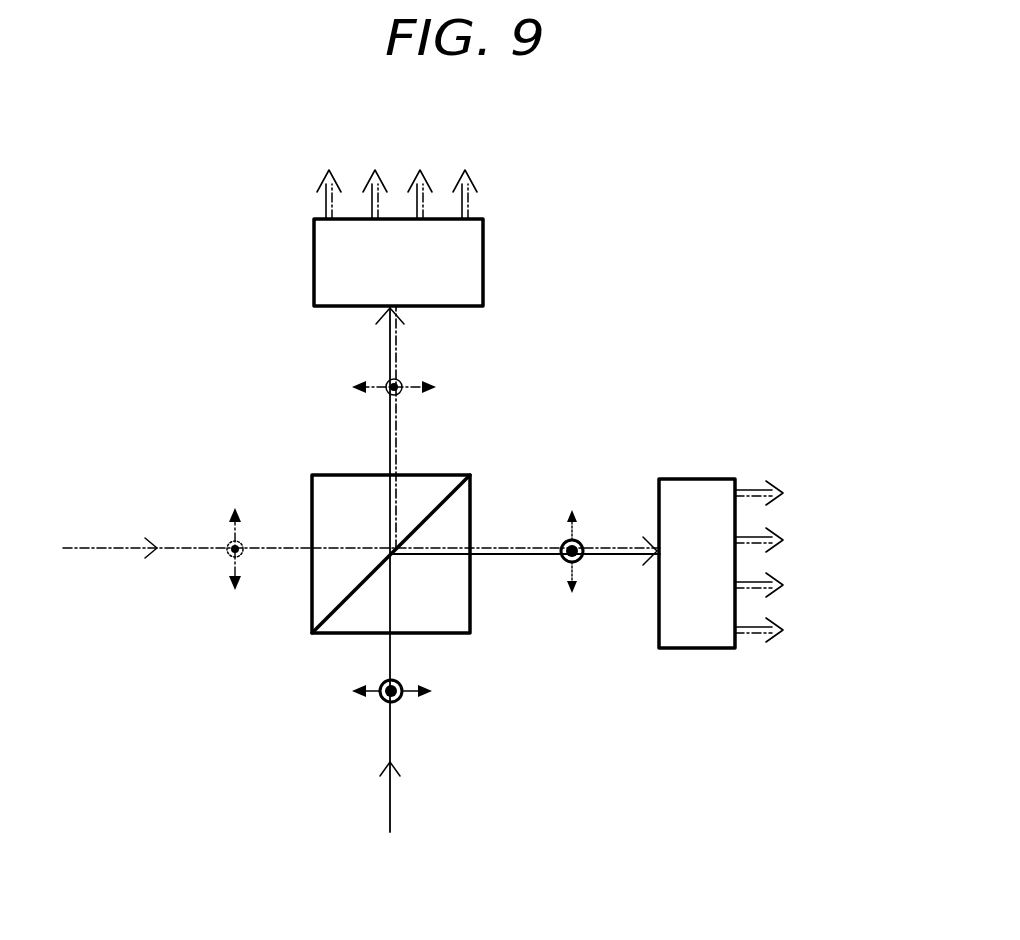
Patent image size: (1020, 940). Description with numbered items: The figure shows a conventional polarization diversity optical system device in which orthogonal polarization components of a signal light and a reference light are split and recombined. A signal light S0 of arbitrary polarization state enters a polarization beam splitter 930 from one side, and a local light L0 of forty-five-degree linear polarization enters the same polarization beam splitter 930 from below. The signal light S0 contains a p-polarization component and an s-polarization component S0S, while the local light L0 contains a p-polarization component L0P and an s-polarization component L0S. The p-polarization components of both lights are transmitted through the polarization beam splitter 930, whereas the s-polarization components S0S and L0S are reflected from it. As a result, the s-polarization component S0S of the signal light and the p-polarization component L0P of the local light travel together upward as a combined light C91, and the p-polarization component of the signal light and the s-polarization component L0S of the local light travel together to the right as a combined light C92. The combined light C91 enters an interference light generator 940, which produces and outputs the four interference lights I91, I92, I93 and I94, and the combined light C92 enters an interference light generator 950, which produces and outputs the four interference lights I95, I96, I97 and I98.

The polarization beam splitter 930 is at (312, 488).
The interference light generator 940 is at (483, 262).
The interference light generator 950 is at (695, 479).
The interference light I91 is at (340, 198).
The interference light I92 is at (387, 198).
The interference light I93 is at (434, 198).
The interference light I94 is at (480, 198).
The interference light I95 is at (752, 508).
The interference light I96 is at (752, 556).
The interference light I97 is at (752, 601).
The interference light I98 is at (752, 648).
The combined light C91 is at (374, 416).
The combined light C92 is at (505, 530).
The signal light S0 is at (110, 546).
The local light L0 is at (393, 803).
The s-polarization component of the signal light S0S is at (400, 395).
The p-polarization component of the local light L0P is at (410, 380).
The s-polarization component of the local light L0S is at (582, 561).